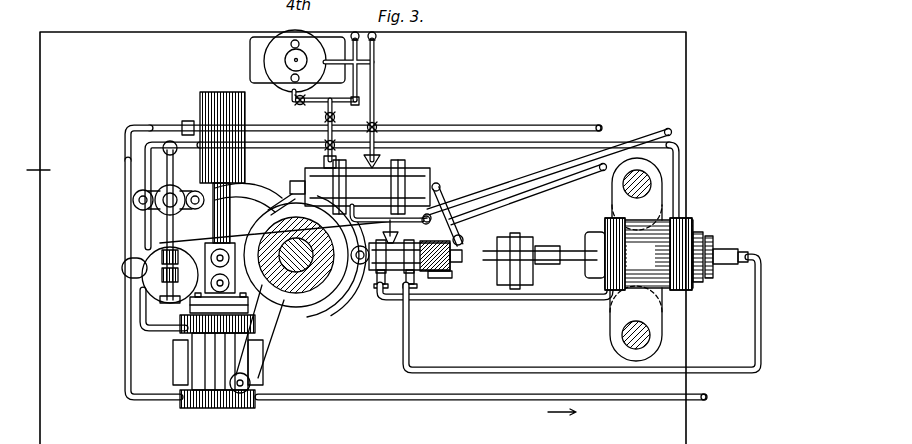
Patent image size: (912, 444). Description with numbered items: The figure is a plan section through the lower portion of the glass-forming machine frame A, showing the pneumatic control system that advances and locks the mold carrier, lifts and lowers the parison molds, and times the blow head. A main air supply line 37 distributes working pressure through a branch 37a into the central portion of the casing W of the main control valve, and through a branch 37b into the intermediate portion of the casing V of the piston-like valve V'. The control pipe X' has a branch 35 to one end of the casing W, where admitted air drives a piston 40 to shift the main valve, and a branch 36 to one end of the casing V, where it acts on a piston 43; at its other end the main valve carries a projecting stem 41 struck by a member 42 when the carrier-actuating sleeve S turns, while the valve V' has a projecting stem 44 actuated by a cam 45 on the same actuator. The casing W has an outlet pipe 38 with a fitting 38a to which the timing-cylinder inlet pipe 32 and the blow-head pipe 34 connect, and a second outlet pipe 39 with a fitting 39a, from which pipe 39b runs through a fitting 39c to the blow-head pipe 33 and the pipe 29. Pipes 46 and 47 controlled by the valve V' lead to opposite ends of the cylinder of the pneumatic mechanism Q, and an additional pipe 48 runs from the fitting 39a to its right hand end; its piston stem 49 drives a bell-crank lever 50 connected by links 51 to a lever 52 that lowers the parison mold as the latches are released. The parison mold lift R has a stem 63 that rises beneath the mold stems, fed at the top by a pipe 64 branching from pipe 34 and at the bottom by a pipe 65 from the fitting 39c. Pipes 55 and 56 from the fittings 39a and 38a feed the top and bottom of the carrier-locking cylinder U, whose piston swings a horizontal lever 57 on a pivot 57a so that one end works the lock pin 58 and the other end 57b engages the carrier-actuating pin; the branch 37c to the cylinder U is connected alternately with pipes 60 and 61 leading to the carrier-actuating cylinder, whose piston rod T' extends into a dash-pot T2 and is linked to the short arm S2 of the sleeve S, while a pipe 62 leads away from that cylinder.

The base frame of the machine A is at (28, 172).
The pneumatic lift for the parison molds R is at (280, 40).
The stem 63 is at (285, 46).
The pipe 65 is at (272, 86).
The pipe 64 is at (290, 104).
The pipe 33 is at (358, 82).
The pipe 34 is at (378, 38).
The pipe 29 is at (325, 118).
The fitting 39c is at (296, 104).
The pipe 39b is at (360, 112).
The fitting 38a is at (378, 124).
The fitting 39a is at (340, 143).
The second outlet pipe 39 is at (324, 160).
The outlet pipe 38 is at (364, 156).
The inlet pipe 32 is at (512, 126).
The piston 40 is at (556, 147).
The pipe 48 is at (684, 165).
The pipe 56 is at (147, 124).
The pipe 55 is at (145, 155).
The pipe 60 is at (138, 400).
The pipe 61 is at (150, 330).
The pipe 62 is at (405, 400).
The dash-pot T2 is at (212, 100).
The piston rod T' is at (219, 293).
The lock pin 58 is at (165, 198).
The lever 57 is at (165, 230).
The pivot 57a is at (158, 244).
The end of the lever 57b is at (160, 300).
The extension or branch 37c is at (124, 268).
The pneumatic carrier-locking mechanism U is at (160, 285).
The carrier-actuating sleeve S is at (318, 300).
The short arm S2 is at (283, 308).
The links 51 is at (252, 380).
The projecting stem 44 is at (354, 302).
The cam 45 is at (335, 305).
The member 42 is at (268, 192).
The projecting stem 41 is at (290, 192).
The casing of the main control valve W is at (434, 172).
The branch 37a is at (438, 180).
The branch 35 is at (442, 196).
The main air supply line 37 is at (545, 175).
The control pipe X' is at (528, 194).
The branch 36 is at (465, 238).
The branch 37b is at (400, 240).
The pneumatic device V is at (406, 296).
The piston-like valve V' is at (446, 285).
The piston 43 is at (440, 272).
The pipe 46 is at (518, 300).
The pipe 47 is at (556, 368).
The lever 52 is at (517, 248).
The bell-crank lever 50 is at (535, 256).
The stem 49 is at (549, 266).
The pneumatic mechanism Q is at (666, 254).